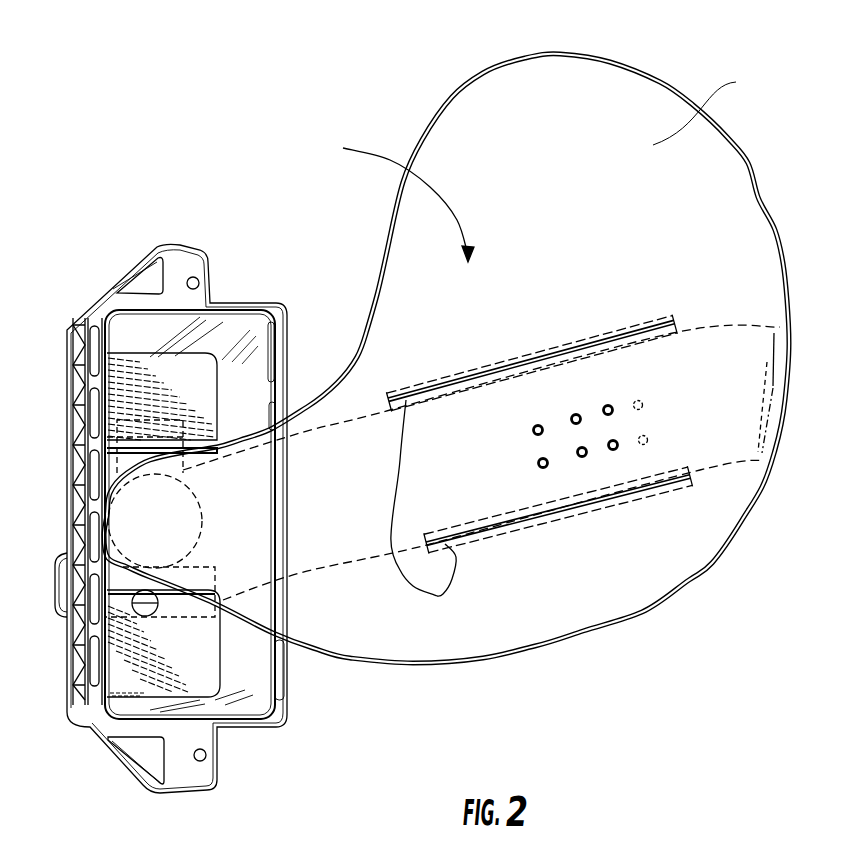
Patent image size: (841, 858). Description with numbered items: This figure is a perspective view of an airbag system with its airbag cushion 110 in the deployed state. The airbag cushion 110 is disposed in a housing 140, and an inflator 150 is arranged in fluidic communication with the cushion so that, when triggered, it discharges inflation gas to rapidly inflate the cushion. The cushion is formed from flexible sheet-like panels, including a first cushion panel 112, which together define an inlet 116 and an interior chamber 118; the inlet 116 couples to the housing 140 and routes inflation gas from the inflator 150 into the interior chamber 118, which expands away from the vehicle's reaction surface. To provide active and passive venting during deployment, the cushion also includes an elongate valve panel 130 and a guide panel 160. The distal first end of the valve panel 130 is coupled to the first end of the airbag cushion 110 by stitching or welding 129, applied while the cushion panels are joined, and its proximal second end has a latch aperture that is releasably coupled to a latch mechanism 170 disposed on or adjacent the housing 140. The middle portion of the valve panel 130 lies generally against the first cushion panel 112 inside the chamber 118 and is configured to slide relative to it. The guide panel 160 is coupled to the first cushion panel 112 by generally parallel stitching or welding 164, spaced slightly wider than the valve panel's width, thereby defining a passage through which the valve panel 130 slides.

The airbag cushion 110 is at (657, 86).
The first cushion panel 112 is at (710, 107).
The interior chamber 118 is at (390, 199).
The valve panel 130 is at (752, 347).
The stitching or welding 129 is at (772, 385).
The guide panel 160 is at (655, 500).
The stitching or welding 164 is at (437, 596).
The inlet 116 is at (134, 521).
The inflator 150 is at (125, 437).
The housing 140 is at (237, 727).
The latch mechanism 170 is at (57, 610).